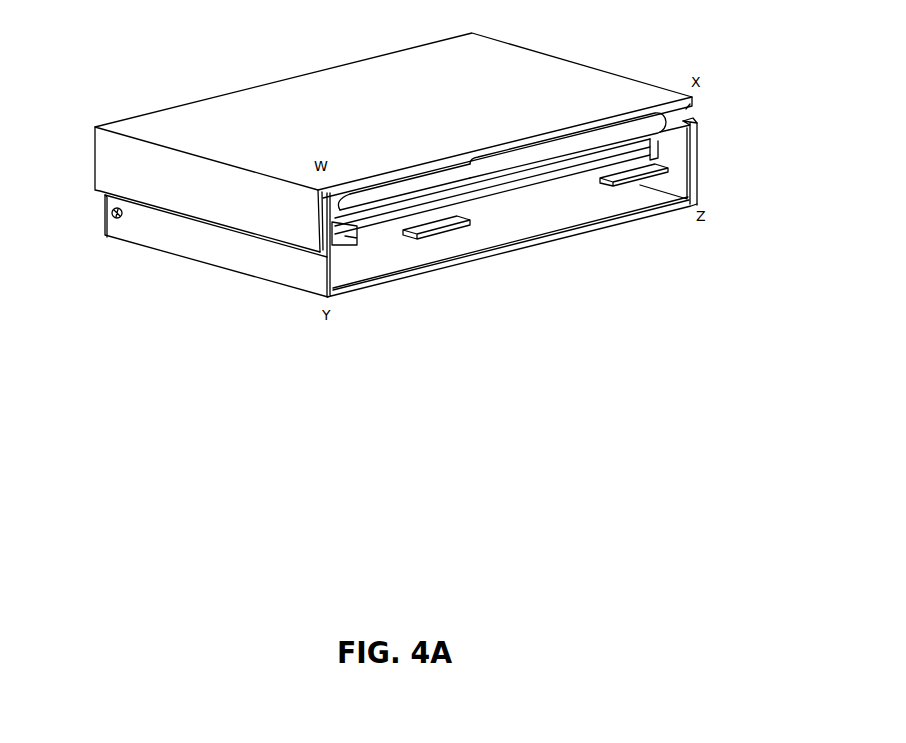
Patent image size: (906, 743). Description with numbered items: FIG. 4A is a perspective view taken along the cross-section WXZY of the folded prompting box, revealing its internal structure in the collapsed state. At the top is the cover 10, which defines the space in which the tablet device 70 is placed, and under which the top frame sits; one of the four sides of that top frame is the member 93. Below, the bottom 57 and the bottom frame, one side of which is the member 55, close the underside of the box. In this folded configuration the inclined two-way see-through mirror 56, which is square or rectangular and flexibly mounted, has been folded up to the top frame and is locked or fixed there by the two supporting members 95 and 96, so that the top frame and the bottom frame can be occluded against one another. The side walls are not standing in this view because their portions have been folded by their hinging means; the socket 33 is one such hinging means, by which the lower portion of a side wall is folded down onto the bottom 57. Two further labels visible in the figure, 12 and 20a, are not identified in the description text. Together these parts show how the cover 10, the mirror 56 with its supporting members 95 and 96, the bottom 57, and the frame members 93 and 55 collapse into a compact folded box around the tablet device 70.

The cover 10 is at (327, 103).
The housing 12 is at (130, 162).
The roller / cylindrical member 20a is at (585, 120).
The socket 33 is at (105, 217).
The member 55 is at (180, 240).
The inclined two-way see-through mirror 56 is at (500, 195).
The bottom 57 is at (378, 263).
The tablet device 70 is at (696, 124).
The member 93 is at (320, 253).
The supporting member 95 is at (627, 172).
The supporting member 96 is at (440, 230).